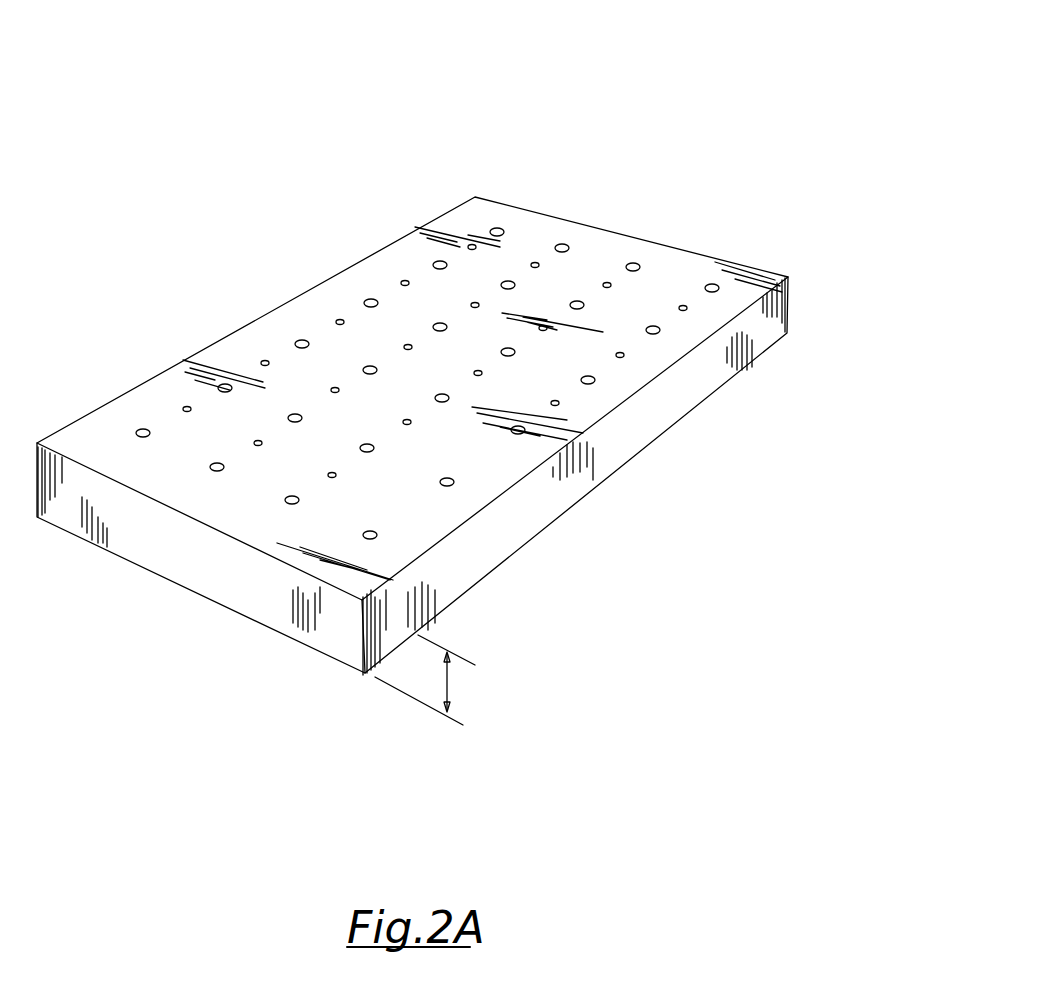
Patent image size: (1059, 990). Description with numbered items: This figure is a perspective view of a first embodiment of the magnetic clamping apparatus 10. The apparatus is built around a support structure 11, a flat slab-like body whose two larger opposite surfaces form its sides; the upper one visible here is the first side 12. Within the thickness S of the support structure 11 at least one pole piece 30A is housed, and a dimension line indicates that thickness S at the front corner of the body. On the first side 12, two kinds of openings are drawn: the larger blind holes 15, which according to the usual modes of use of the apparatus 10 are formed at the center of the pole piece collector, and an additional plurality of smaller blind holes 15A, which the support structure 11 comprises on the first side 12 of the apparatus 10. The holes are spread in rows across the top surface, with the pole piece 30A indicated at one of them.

The magnetic clamping apparatus 10 is at (601, 115).
The support structure 11 is at (492, 553).
The first side 12 is at (268, 477).
The blind holes 15 is at (143, 437).
The additional blind holes 15A is at (403, 283).
The pole piece 30A is at (431, 260).
The thickness S is at (447, 685).